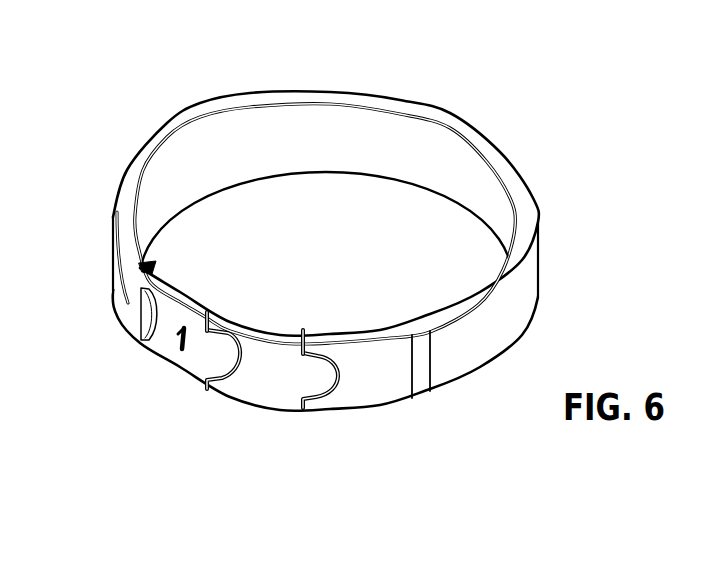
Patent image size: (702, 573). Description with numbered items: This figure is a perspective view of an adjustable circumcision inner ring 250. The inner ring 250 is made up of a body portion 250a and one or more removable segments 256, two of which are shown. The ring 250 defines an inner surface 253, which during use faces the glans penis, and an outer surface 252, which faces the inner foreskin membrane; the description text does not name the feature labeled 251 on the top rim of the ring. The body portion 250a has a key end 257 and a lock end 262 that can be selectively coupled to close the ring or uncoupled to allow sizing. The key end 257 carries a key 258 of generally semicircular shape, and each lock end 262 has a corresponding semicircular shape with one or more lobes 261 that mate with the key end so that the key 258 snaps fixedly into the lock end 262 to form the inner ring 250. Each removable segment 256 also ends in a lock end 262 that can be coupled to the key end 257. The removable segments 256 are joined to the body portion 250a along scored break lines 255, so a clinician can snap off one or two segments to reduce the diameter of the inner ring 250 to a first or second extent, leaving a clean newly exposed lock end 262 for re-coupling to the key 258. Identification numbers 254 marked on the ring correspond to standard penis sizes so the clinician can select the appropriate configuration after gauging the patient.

The inner ring 250 is at (480, 104).
The body portion 250a is at (477, 333).
The top surface 251 is at (178, 137).
The outer surface 252 is at (517, 310).
The inner surface 253 is at (250, 147).
The identification numbers 254 is at (187, 352).
The scored break lines 255 is at (225, 347).
The removable segments 256 is at (167, 323).
The key end 257 is at (133, 348).
The key 258 is at (150, 306).
The lobes 261 is at (318, 347).
The lock end 262 is at (153, 345).